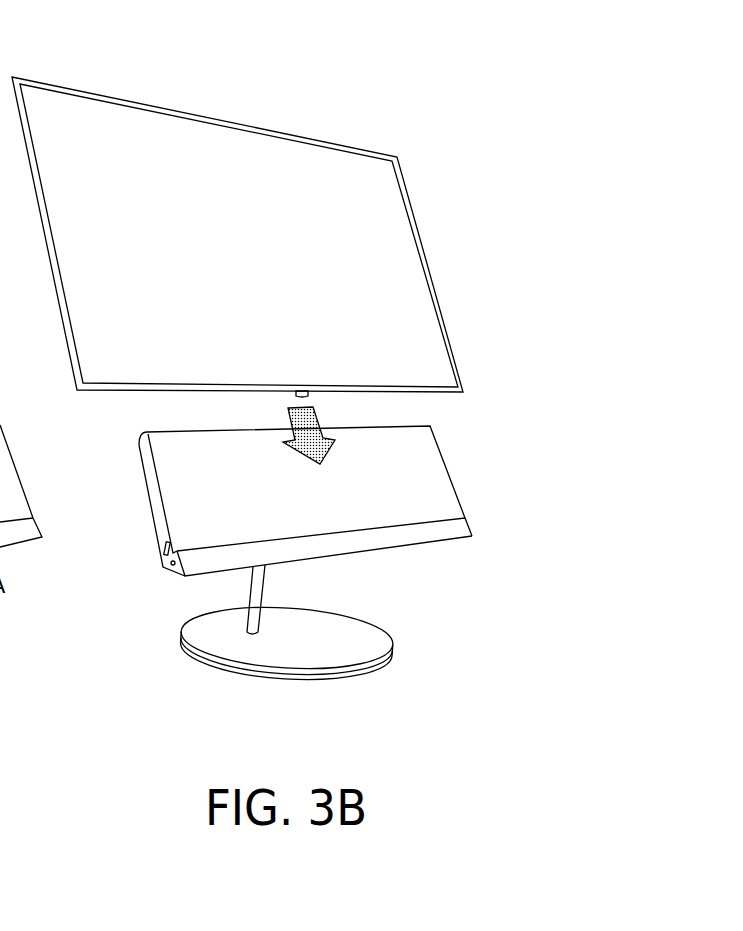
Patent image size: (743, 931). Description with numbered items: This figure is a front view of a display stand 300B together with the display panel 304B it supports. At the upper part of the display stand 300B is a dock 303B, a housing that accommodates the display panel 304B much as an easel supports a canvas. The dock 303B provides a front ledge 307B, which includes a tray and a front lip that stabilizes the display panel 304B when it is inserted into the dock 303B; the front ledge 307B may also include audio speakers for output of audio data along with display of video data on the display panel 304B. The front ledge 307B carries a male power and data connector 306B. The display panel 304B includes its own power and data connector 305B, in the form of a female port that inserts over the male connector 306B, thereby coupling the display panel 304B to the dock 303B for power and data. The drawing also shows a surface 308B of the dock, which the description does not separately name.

The display stand 300B is at (542, 363).
The display panel 304B is at (222, 137).
The power and data connector 305B is at (306, 396).
The base housing front surface 308B is at (428, 485).
The front ledge 307B is at (465, 518).
The male power and data connector 306B is at (337, 537).
The dock 303B is at (420, 548).